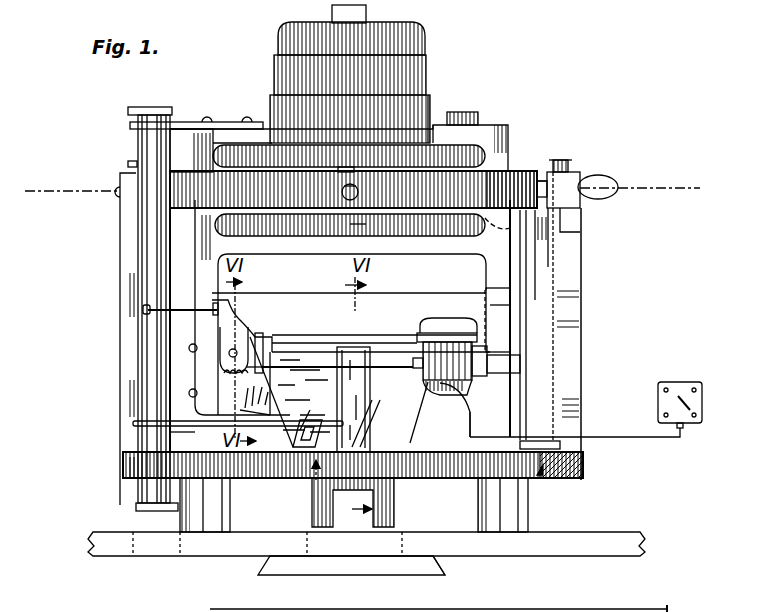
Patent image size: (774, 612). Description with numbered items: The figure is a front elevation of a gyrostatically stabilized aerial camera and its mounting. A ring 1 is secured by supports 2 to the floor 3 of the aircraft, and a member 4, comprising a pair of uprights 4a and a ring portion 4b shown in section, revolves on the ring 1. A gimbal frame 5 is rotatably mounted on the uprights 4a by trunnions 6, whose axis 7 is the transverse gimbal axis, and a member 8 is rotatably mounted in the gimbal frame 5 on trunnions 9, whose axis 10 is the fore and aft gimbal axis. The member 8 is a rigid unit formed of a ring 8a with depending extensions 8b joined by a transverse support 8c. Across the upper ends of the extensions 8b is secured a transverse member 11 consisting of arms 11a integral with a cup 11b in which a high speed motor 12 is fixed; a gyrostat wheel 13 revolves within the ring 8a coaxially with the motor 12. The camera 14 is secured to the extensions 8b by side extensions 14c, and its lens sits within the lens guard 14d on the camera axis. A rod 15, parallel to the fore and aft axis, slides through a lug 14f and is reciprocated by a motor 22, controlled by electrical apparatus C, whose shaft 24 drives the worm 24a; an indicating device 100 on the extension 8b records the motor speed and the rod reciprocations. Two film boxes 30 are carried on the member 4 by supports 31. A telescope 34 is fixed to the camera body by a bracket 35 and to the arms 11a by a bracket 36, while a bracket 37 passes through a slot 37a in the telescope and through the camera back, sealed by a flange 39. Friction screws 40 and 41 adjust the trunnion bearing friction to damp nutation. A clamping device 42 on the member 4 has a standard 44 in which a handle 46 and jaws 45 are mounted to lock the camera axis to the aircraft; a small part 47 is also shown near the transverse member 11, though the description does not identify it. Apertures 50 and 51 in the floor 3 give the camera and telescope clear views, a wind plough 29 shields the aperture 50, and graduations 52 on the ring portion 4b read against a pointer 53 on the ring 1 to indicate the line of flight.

The ring 1 is at (283, 472).
The supports 2 is at (185, 524).
The floor 3 is at (528, 548).
The member 4 is at (585, 455).
The uprights 4a is at (123, 283).
The ring portion 4b is at (170, 455).
The gimbal frame 5 is at (500, 170).
The trunnions 6 is at (583, 201).
The transverse gimbal axis 7 is at (366, 189).
The member 8 is at (207, 157).
The ring 8a is at (295, 172).
The depending extensions 8b is at (210, 330).
The transverse support 8c is at (290, 247).
The trunnions 9 is at (352, 197).
The fore and aft gimbal axis 10 is at (355, 609).
The transverse member 11 is at (230, 133).
The arms 11a is at (492, 132).
The cup 11b is at (428, 102).
The high speed motor 12 is at (425, 32).
The gyrostat wheel 13 is at (357, 223).
The camera 14 is at (407, 433).
The side extensions 14c is at (260, 393).
The lens guard 14d is at (360, 524).
The lug 14f is at (200, 349).
The rod 15 is at (133, 422).
The motor 22 is at (443, 353).
The shaft 24 is at (380, 363).
The worm 24a is at (223, 368).
The wind plough 29 is at (432, 567).
The film boxes 30 is at (397, 297).
The supports 31 is at (348, 357).
The telescope 34 is at (146, 249).
The bracket 35 is at (182, 428).
The bracket 36 is at (176, 120).
The bracket 37 is at (177, 306).
The slot 37a is at (146, 308).
The flange 39 is at (237, 312).
The friction screw 40 is at (568, 162).
The friction screw 41 is at (338, 172).
The clamping device 42 is at (533, 216).
The standard 44 is at (537, 278).
The jaws 45 is at (553, 160).
The handle 46 is at (618, 183).
The block 47 is at (477, 112).
The aperture 50 is at (403, 540).
The aperture 51 is at (180, 557).
The graduations 52 is at (377, 447).
The pointer 53 is at (316, 480).
The indicating device 100 is at (521, 363).
The electrical apparatus C is at (606, 394).